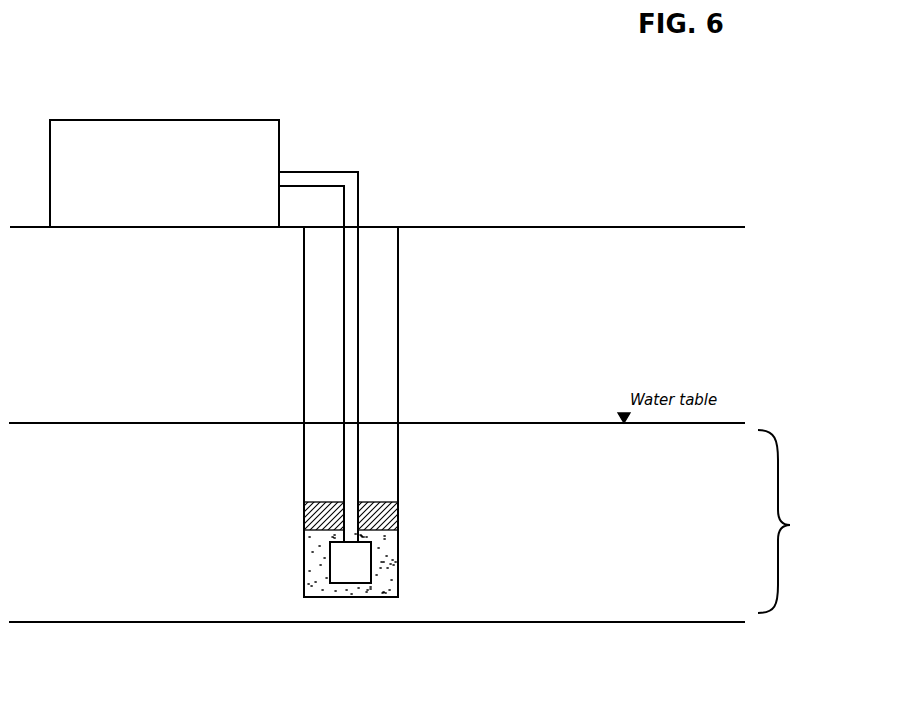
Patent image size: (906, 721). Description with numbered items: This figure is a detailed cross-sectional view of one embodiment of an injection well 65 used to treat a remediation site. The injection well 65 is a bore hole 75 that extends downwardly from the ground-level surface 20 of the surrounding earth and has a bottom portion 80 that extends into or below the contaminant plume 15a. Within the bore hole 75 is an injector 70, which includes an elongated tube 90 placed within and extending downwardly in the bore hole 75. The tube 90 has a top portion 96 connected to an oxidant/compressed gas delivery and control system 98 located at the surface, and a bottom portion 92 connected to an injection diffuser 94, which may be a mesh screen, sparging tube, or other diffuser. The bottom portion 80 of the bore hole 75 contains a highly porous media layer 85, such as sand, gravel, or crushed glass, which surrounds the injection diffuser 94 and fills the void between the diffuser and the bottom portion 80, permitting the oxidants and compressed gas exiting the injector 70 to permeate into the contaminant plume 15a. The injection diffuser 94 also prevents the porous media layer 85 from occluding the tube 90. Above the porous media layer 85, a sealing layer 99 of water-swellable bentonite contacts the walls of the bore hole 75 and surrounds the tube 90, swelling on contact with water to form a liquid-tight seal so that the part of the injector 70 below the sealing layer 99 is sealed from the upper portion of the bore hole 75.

The oxidant/compressed gas delivery and control system 98 is at (164, 184).
The top portion 96 is at (370, 158).
The injection well 65 is at (377, 217).
The injector 70 is at (363, 327).
The bore hole 75 is at (398, 350).
The ground-level surface 20 is at (598, 226).
The elongated tube 90 is at (353, 408).
The sealing layer 99 is at (397, 503).
The highly porous media layer 85 is at (388, 560).
The injection diffuser 94 is at (348, 568).
The bottom portion 92 is at (313, 570).
The bottom portion 80 is at (415, 587).
The contaminant plume 15a is at (797, 521).